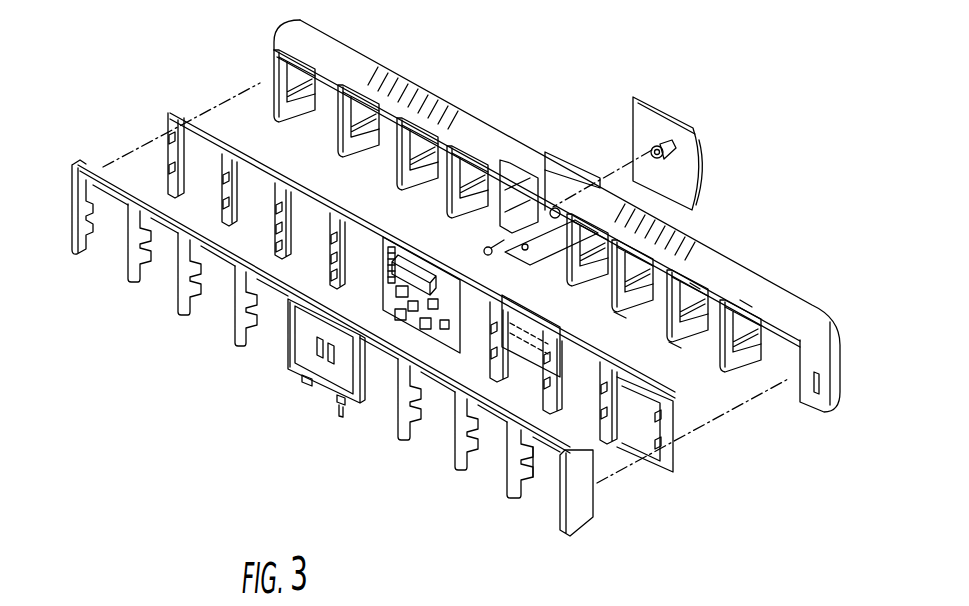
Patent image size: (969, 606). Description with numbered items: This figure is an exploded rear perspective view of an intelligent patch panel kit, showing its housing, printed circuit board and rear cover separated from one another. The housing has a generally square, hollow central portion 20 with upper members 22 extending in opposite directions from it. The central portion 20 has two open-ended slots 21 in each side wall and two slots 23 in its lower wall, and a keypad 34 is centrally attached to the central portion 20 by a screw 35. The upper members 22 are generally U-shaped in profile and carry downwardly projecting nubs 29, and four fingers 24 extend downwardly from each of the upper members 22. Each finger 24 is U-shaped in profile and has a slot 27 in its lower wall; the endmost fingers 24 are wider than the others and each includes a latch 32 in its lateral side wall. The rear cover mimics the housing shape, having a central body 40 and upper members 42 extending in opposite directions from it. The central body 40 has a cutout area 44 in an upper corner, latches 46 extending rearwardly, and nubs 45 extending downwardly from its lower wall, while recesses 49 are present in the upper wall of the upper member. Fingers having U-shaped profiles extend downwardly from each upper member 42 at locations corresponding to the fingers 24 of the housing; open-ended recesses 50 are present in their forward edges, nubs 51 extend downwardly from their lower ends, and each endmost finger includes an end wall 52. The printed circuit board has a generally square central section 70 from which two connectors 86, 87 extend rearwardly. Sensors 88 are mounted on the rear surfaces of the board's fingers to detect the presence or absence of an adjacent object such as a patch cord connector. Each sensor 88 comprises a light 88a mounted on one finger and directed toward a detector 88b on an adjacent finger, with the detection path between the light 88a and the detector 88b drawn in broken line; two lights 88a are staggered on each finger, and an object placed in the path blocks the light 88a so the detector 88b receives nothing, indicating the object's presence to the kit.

The central portion 20 is at (548, 262).
The open-ended slots 21 is at (672, 262).
The upper members 22 is at (348, 46).
The slots 23 is at (523, 250).
The fingers 24 is at (366, 152).
The slot 27 is at (666, 347).
The nubs 29 is at (690, 284).
The latch 32 is at (820, 380).
The keypad 34 is at (683, 182).
The screw 35 is at (489, 246).
The central body 40 is at (342, 378).
The upper members 42 is at (188, 234).
The cutout area 44 is at (317, 347).
The nubs 45 is at (305, 382).
The latches 46 is at (313, 313).
The recesses 49 is at (131, 202).
The open-ended recesses 50 is at (537, 449).
The nubs 51 is at (404, 437).
The end wall 52 is at (587, 514).
The central section 70 is at (443, 343).
The connector 86 is at (414, 268).
The connector 87 is at (391, 254).
The sensors 88 is at (541, 320).
The light 88a is at (553, 380).
The detector 88b is at (492, 322).